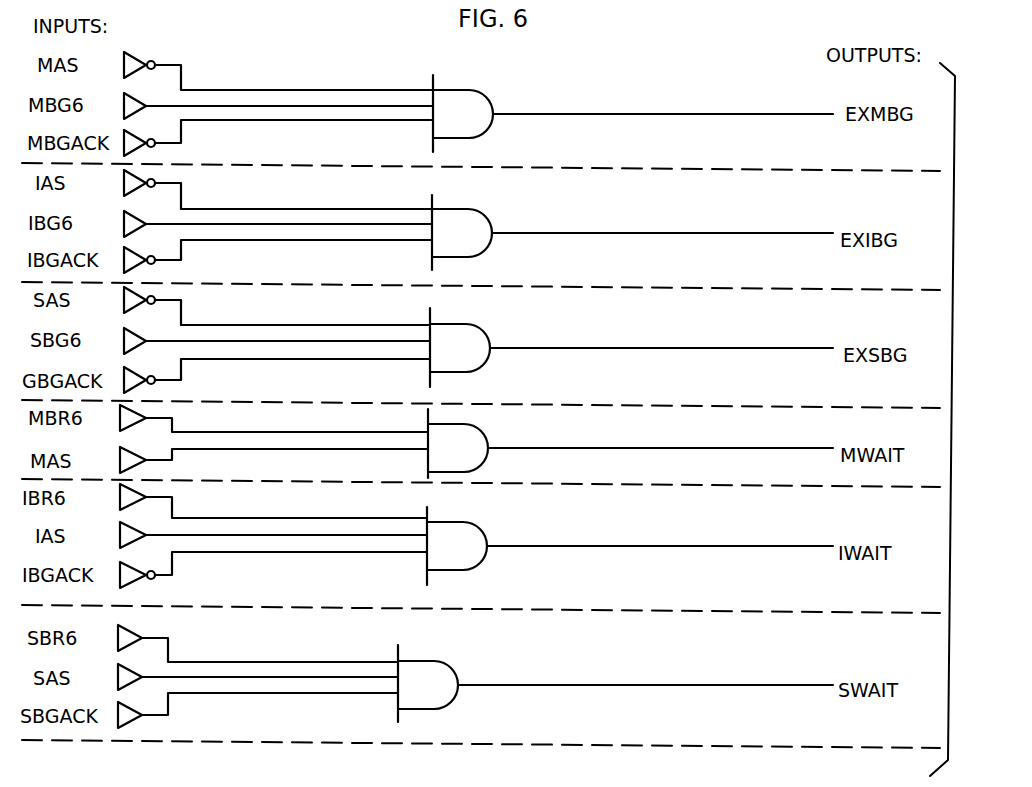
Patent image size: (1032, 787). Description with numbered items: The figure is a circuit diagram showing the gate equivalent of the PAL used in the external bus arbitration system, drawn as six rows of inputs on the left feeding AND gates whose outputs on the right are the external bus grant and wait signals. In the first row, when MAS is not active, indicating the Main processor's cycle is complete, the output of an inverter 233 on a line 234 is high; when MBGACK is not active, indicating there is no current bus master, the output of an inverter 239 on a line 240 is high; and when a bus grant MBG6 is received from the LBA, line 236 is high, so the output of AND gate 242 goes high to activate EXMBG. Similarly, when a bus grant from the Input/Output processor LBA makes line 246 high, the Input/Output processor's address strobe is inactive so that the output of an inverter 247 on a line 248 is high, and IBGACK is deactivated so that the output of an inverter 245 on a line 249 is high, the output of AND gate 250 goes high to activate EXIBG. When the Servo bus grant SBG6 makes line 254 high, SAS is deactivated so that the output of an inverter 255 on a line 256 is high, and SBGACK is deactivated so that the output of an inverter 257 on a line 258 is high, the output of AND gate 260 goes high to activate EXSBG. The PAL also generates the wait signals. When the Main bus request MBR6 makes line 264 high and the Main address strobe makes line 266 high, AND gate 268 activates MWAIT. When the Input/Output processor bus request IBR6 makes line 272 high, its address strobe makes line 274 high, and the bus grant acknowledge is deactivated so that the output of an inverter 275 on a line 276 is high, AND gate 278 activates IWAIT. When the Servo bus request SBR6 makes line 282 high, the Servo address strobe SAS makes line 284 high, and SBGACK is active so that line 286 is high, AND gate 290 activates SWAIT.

The inverter 233 is at (145, 60).
The line 234 is at (213, 90).
The line 236 is at (305, 106).
The inverter 239 is at (128, 132).
The line 240 is at (250, 120).
The AND gate 242 is at (470, 98).
The inverter 245 is at (140, 268).
The line 246 is at (276, 224).
The inverter 247 is at (140, 176).
The line 248 is at (340, 209).
The line 249 is at (322, 240).
The AND gate 250 is at (478, 222).
The line 254 is at (255, 341).
The inverter 255 is at (150, 294).
The line 256 is at (340, 325).
The inverter 257 is at (140, 384).
The line 258 is at (305, 359).
The AND gate 260 is at (485, 338).
The line 264 is at (250, 432).
The line 266 is at (270, 449).
The AND gate 268 is at (490, 442).
The line 272 is at (248, 518).
The line 274 is at (347, 537).
The inverter 275 is at (132, 582).
The line 276 is at (250, 552).
The AND gate 278 is at (468, 535).
The line 282 is at (230, 662).
The line 284 is at (290, 677).
The line 286 is at (222, 693).
The AND gate 290 is at (443, 677).